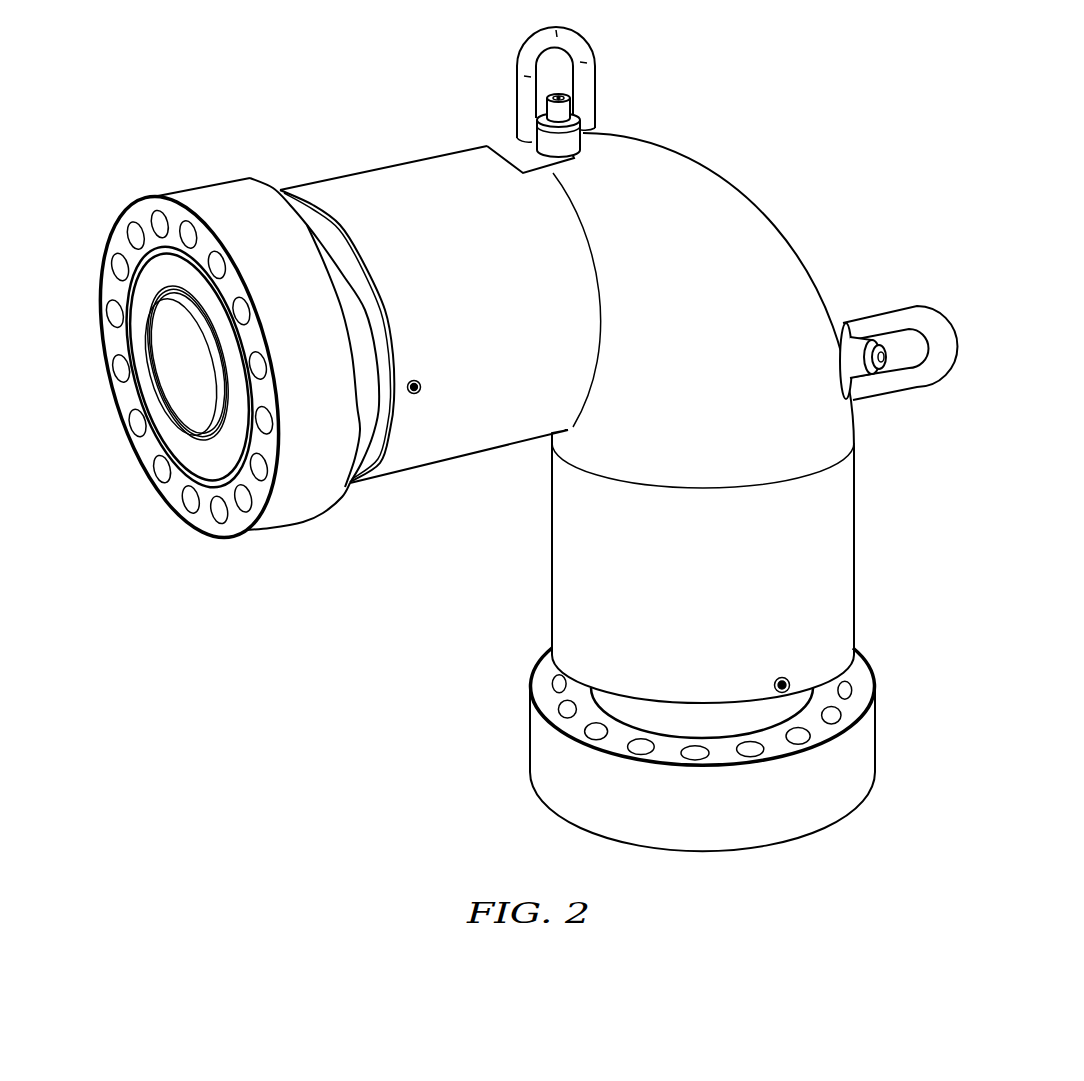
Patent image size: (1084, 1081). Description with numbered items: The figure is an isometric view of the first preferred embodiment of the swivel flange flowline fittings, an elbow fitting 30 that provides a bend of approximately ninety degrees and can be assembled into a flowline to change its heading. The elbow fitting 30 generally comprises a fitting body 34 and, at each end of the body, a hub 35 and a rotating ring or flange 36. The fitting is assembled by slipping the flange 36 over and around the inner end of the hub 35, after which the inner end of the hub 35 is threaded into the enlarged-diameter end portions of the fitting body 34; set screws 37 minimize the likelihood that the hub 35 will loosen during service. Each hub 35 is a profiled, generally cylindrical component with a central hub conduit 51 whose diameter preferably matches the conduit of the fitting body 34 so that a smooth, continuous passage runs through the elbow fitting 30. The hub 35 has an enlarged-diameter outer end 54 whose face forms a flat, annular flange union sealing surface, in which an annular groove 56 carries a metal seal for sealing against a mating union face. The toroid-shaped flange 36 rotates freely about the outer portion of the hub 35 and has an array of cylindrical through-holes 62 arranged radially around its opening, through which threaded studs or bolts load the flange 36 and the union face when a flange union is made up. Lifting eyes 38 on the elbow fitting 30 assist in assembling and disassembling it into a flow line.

The elbow fitting 30 is at (500, 425).
The fitting body 34 is at (711, 205).
The hub 35 is at (138, 298).
The flange 36 is at (291, 506).
The set screw 37 is at (421, 387).
The lifting eye 38 is at (574, 38).
The hub conduit 51 is at (178, 364).
The enlarged-diameter outer end 54 is at (134, 350).
The annular groove 56 is at (203, 447).
The through-holes 62 is at (130, 230).